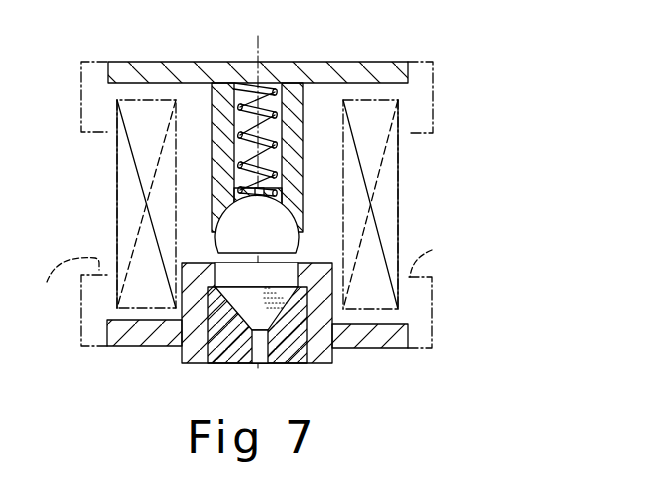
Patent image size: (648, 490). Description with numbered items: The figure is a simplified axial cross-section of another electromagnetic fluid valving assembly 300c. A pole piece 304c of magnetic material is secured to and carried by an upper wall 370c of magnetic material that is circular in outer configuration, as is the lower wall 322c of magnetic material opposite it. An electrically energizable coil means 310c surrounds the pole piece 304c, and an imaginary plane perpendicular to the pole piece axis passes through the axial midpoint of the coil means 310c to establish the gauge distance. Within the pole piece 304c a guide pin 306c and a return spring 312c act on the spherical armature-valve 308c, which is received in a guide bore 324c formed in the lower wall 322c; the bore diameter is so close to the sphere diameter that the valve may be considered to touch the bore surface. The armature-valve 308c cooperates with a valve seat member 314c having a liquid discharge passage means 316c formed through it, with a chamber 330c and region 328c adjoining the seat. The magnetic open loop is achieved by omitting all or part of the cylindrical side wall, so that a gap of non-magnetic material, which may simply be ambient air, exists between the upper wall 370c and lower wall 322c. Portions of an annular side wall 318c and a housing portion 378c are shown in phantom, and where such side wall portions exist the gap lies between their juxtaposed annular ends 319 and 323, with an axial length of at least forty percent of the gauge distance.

The electromagnetic assembly 300c is at (74, 60).
The upper wall 370c is at (210, 70).
The housing portion 378c is at (420, 90).
The annular side wall 318c is at (97, 100).
The annular end of side wall 319 is at (82, 131).
The coil means 310c is at (132, 180).
The pole piece 304c is at (204, 155).
The guide pin 306c is at (226, 214).
The return spring 312c is at (236, 121).
The lower wall 322c is at (128, 347).
The armature-valve 308c is at (193, 333).
The valve seat member 314c is at (220, 354).
The liquid discharge passage means 316c is at (256, 352).
The valve chamber 330c is at (184, 270).
The ball valve member 328c is at (252, 279).
The guide bore 324c is at (285, 290).
The annular end of side wall 323 is at (248, 266).